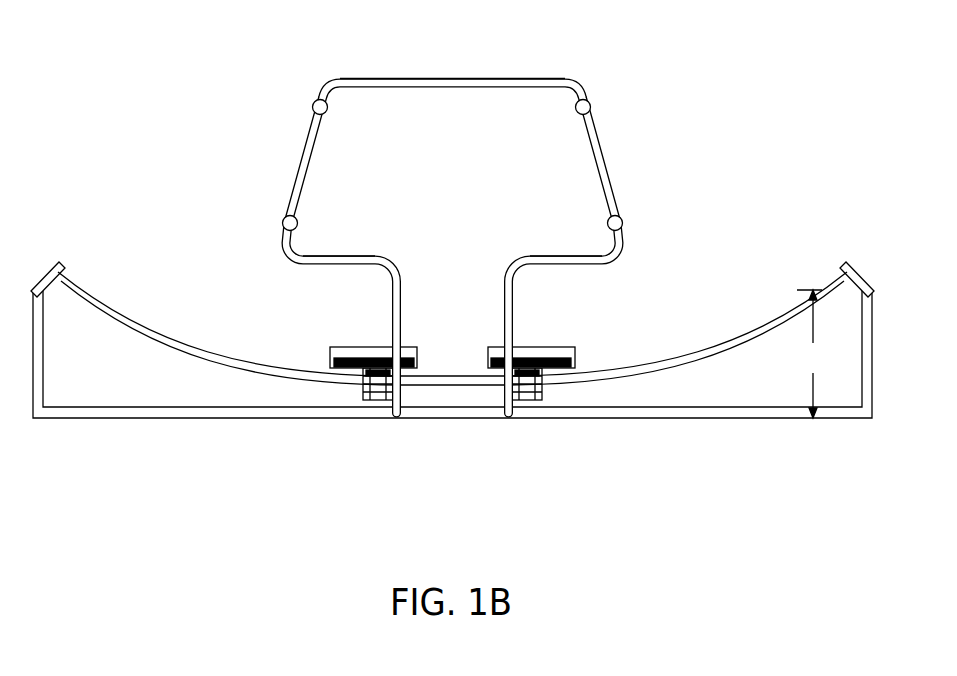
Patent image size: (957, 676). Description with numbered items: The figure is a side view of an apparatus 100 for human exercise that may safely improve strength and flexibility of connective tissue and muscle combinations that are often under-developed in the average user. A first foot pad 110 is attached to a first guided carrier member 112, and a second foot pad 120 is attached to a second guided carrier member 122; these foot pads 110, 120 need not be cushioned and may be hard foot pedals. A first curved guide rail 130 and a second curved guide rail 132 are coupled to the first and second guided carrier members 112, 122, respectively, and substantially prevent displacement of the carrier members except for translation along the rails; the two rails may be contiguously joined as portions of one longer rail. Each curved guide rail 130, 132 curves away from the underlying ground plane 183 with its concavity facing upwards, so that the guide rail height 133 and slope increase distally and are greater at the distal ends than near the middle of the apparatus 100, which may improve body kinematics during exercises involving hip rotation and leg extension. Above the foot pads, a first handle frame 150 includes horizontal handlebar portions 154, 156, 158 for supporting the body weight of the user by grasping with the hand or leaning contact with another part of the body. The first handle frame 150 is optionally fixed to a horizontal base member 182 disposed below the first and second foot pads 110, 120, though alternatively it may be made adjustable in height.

The apparatus for human exercise 100 is at (720, 166).
The first foot pad 110 is at (537, 357).
The first guided carrier member 112 is at (532, 387).
The second foot pad 120 is at (372, 357).
The second guided carrier member 122 is at (372, 387).
The first curved guide rail 130 is at (725, 345).
The second curved guide rail 132 is at (120, 317).
The guide rail height 133 is at (814, 354).
The first handle frame 150 is at (600, 147).
The horizontal handlebar portion 154 is at (457, 82).
The horizontal handlebar portion 156 is at (343, 258).
The horizontal handlebar portion 158 is at (558, 258).
The horizontal base member 182 is at (689, 415).
The ground plane 183 is at (637, 422).